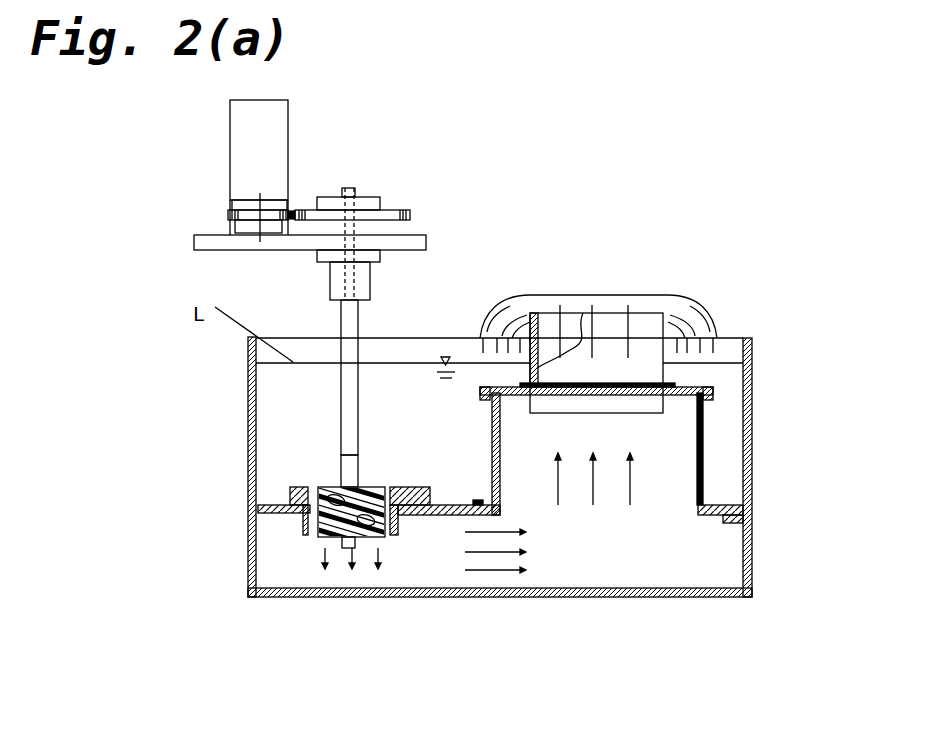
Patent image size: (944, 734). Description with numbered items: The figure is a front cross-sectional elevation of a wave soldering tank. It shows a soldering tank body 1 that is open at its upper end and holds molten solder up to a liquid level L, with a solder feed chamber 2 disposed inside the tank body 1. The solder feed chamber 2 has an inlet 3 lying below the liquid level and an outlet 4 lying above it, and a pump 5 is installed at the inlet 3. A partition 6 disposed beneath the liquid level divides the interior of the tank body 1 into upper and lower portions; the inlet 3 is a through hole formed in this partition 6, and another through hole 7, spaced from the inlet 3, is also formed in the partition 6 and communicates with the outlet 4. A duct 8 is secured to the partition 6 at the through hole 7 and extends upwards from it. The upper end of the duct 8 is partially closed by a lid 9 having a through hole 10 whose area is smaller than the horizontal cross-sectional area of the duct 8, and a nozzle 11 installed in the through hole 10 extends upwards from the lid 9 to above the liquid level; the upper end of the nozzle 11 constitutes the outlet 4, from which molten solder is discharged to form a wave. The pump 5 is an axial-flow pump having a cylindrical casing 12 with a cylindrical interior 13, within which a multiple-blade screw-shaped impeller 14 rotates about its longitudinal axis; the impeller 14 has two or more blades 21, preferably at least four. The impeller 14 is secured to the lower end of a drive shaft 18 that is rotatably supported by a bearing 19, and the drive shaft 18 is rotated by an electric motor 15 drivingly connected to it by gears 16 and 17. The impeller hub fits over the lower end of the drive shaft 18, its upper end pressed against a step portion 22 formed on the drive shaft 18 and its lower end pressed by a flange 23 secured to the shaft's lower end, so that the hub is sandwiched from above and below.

The soldering tank body 1 is at (543, 467).
The solder feed chamber 2 is at (549, 546).
The inlet 3 is at (300, 517).
The outlet 4 is at (598, 293).
The pump 5 is at (381, 478).
The partition 6 is at (273, 510).
The through hole 7 is at (735, 515).
The duct 8 is at (766, 482).
The lid 9 is at (665, 404).
The through hole 10 is at (643, 388).
The nozzle 11 is at (662, 343).
The cylindrical casing 12 is at (446, 566).
The cylindrical interior 13 is at (414, 583).
The impeller 14 is at (303, 575).
The electric motor 15 is at (272, 133).
The gear 16 is at (245, 207).
The gear 17 is at (387, 208).
The drive shaft 18 is at (350, 407).
The bearing 19 is at (337, 277).
The blades 21 is at (325, 485).
The step portion 22 is at (350, 472).
The flange 23 is at (343, 585).